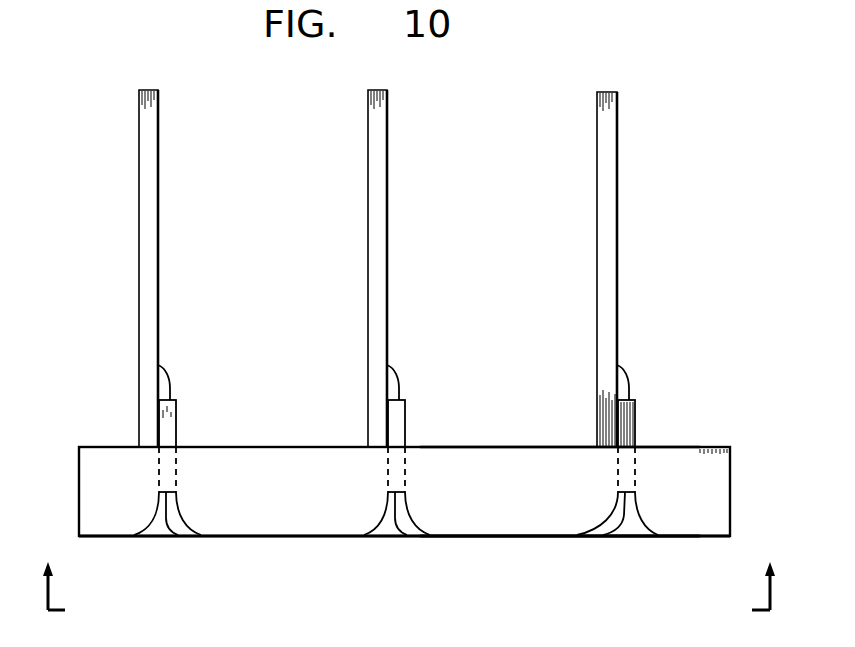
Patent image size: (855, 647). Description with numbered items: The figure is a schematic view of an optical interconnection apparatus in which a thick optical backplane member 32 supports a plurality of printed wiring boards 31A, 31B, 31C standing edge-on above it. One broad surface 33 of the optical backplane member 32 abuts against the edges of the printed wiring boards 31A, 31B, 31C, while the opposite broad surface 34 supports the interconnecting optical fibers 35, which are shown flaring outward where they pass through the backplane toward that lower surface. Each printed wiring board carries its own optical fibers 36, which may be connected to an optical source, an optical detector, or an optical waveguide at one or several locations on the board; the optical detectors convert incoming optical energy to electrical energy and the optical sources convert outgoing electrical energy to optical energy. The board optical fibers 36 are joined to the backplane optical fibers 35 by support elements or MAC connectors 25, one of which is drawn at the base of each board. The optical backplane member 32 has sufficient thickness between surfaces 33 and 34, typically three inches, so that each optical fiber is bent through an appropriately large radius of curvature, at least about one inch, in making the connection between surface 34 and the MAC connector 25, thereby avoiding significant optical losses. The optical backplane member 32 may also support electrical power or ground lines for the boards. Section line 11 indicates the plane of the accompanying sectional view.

The section line 11- 11 is at (409, 593).
The MAC connector 25 is at (178, 428).
The printed wiring board 31A is at (152, 178).
The printed wiring board 31B is at (381, 130).
The printed wiring board 31C is at (602, 177).
The optical backplane member 32 is at (712, 489).
The broad surface 33 is at (543, 443).
The opposite broad surface 34 is at (508, 540).
The optical fiber 35 is at (167, 536).
The optical fiber of the printed wiring board 36 is at (170, 383).